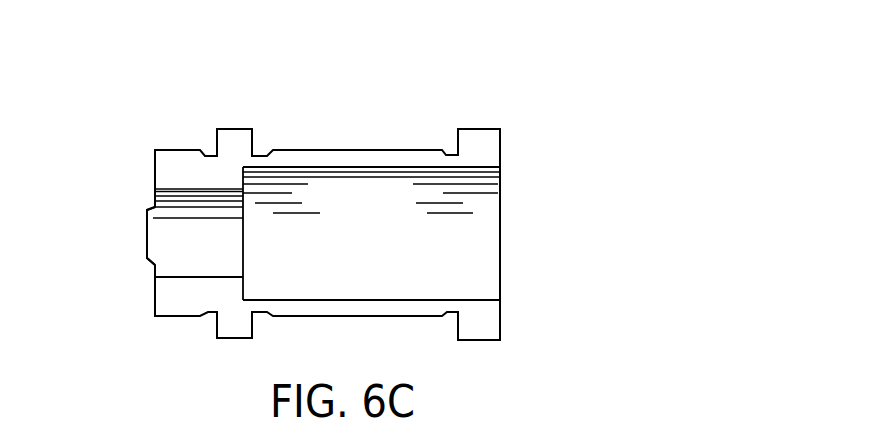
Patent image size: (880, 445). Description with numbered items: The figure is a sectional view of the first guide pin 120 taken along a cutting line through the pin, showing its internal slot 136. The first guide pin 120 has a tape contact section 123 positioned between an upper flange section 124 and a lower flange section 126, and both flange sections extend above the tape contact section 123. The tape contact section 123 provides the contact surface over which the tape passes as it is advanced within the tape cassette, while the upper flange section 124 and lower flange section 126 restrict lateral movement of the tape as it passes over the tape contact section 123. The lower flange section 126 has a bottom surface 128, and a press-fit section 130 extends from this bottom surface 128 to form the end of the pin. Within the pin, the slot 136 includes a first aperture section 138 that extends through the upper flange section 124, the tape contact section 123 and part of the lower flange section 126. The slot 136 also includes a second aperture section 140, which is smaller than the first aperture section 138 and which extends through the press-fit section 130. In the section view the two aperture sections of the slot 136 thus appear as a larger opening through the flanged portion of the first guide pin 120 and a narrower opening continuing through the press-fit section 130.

The first guide pin 120 is at (550, 136).
The tape contact section 123 is at (349, 150).
The upper flange section 124 is at (482, 142).
The lower flange section 126 is at (247, 142).
The bottom surface 128 is at (217, 137).
The press-fit section 130 is at (165, 157).
The slot 136 is at (521, 254).
The first aperture section 138 is at (386, 187).
The second aperture section 140 is at (173, 266).